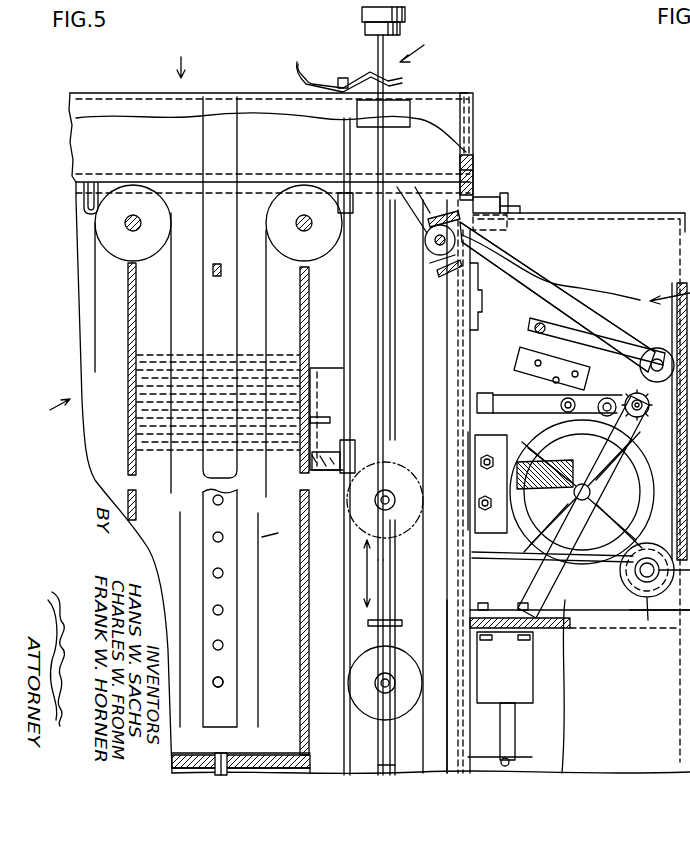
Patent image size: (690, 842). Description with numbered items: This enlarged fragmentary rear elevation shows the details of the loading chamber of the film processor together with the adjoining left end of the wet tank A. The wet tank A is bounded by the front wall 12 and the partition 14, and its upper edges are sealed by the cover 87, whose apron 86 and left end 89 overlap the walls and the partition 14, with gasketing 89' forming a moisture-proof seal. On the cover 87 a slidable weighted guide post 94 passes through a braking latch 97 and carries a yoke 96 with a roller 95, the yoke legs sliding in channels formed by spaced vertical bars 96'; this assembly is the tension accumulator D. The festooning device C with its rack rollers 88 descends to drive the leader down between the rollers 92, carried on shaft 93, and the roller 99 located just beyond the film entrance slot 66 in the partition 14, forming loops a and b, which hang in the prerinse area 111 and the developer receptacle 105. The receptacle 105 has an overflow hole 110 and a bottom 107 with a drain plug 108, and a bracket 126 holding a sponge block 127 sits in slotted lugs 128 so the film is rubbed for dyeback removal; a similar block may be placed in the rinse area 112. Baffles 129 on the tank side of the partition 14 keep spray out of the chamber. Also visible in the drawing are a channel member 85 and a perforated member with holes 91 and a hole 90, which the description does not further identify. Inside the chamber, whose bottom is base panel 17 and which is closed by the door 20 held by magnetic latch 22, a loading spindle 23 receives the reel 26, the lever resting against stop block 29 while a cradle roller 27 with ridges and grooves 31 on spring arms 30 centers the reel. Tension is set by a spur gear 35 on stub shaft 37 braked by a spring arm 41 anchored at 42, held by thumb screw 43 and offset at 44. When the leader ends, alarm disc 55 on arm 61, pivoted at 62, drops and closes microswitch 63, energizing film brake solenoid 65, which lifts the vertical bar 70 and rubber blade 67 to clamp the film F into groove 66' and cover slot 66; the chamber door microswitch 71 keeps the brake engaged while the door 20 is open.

The apron 86 is at (122, 123).
The cover 87 is at (243, 92).
The left end 89 is at (493, 146).
The gasketing 89' is at (493, 170).
The weighted guide post 94 is at (378, 47).
The braking latch 97 is at (349, 66).
The magnetic latch 22 is at (503, 197).
The groove 66' is at (526, 194).
The film entrance slot 66 is at (576, 259).
The door 20 is at (640, 215).
The rinse area 112 is at (78, 247).
The front wall 12 is at (109, 398).
The roller 92 is at (148, 195).
The shaft 93 is at (133, 216).
The slotted lug 128 is at (96, 182).
The channel 85 is at (212, 264).
The overflow hole 110 is at (128, 335).
The developer receptacle 105 is at (145, 463).
The prerinse area 111 is at (310, 636).
The bracket 126 is at (327, 375).
The sponge block 127 is at (327, 472).
The roller 95 is at (357, 517).
The roller 99 is at (449, 214).
The baffle 129 is at (432, 216).
The yoke 96 is at (381, 487).
The vertical bar 96' is at (358, 758).
The partition 14 is at (460, 362).
The chamber door microswitch 71 is at (485, 520).
The vertical bar 70 is at (460, 732).
The rubber blade 67 is at (482, 282).
The arm 61 is at (600, 348).
The alarm disc 55 is at (660, 348).
The pivot 62 is at (528, 326).
The microswitch 63 is at (528, 356).
The offset 44 is at (556, 377).
The anchor 42 is at (483, 392).
The thumb screw 43 is at (560, 398).
The stub shaft 37 is at (600, 410).
The spur gear 35 is at (606, 394).
The spring arm 41 is at (508, 412).
The loading spindle 23 is at (583, 500).
The stop block 29 is at (555, 470).
The spring arm 30 is at (510, 560).
The reel 26 is at (580, 563).
The ridges and grooves 31 is at (630, 585).
The cradle roller 27 is at (647, 600).
The base panel 17 is at (548, 630).
The film brake solenoid 65 is at (525, 690).
The rack roller 88 is at (230, 670).
The holes 91 is at (224, 573).
The hole 90 is at (224, 682).
The drain plug 108 is at (190, 760).
The bottom 107 is at (268, 755).
The wet tank A is at (50, 412).
The festooning device C is at (179, 58).
The accumulator D is at (422, 46).
The film F is at (172, 318).
The loop a is at (350, 610).
The loop b is at (271, 526).